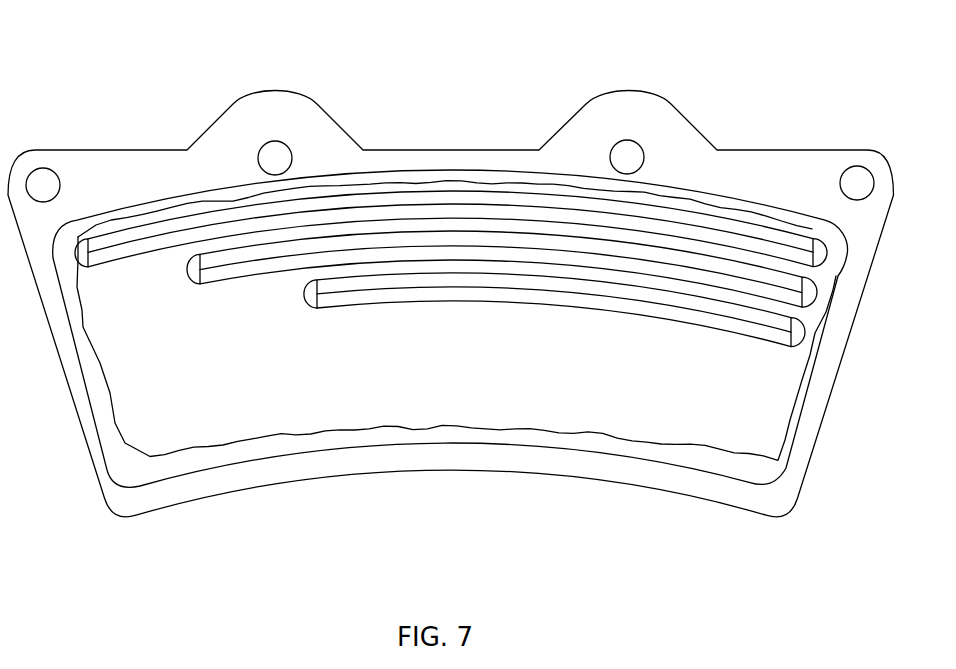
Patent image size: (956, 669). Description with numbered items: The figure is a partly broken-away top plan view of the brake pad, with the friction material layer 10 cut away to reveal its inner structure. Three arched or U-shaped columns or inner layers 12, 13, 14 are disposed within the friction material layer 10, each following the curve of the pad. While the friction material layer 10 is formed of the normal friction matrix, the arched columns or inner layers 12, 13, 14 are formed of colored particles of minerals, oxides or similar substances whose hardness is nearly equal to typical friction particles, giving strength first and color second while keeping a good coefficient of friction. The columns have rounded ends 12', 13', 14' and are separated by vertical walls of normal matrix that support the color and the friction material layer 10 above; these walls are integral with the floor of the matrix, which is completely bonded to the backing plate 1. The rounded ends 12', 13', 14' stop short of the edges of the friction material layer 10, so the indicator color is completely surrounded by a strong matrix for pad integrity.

The backing plate 1 is at (320, 142).
The friction material layer 10 is at (173, 463).
The arched column or inner layer 12 is at (554, 311).
The rounded end 12' is at (536, 335).
The arched column or inner layer 13 is at (501, 277).
The rounded end 13' is at (527, 316).
The arched column or inner layer 14 is at (450, 252).
The rounded end 14' is at (451, 175).